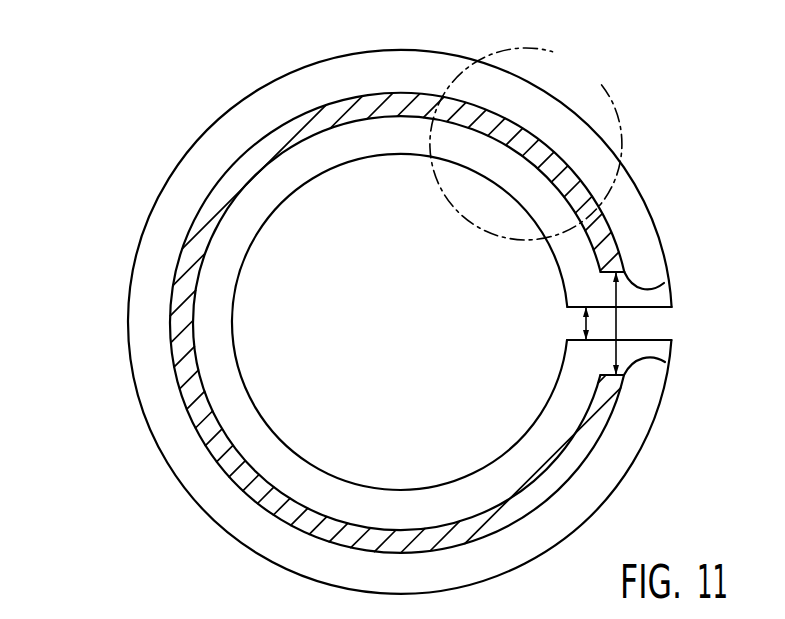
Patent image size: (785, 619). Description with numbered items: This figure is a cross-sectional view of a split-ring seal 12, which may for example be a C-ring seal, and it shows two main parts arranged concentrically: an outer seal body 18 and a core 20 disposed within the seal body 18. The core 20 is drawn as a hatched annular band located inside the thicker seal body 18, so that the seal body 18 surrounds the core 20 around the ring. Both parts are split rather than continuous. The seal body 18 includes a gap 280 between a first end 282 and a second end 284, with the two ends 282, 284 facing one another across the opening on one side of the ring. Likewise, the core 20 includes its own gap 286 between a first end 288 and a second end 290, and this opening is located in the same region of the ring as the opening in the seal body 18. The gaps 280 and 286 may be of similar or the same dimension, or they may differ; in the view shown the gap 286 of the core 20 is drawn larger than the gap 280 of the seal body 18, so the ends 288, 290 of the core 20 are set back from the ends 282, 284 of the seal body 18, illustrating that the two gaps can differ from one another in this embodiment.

The split-ring seal 12 is at (57, 197).
The seal body 18 is at (188, 182).
The core 20 is at (180, 305).
The gap 280 is at (584, 326).
The first end 282 is at (565, 317).
The second end 284 is at (565, 333).
The gap 286 is at (617, 326).
The first end 288 is at (664, 283).
The second end 290 is at (665, 362).